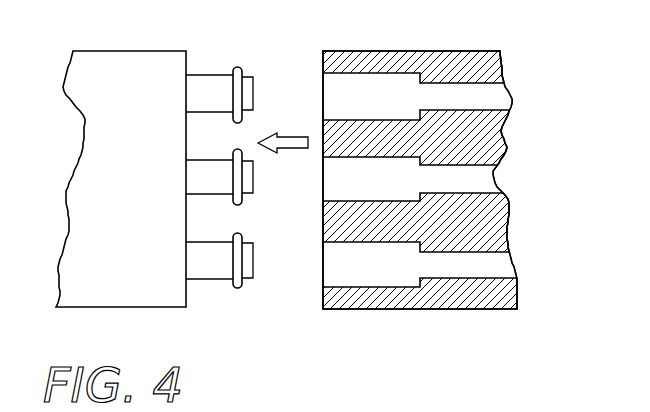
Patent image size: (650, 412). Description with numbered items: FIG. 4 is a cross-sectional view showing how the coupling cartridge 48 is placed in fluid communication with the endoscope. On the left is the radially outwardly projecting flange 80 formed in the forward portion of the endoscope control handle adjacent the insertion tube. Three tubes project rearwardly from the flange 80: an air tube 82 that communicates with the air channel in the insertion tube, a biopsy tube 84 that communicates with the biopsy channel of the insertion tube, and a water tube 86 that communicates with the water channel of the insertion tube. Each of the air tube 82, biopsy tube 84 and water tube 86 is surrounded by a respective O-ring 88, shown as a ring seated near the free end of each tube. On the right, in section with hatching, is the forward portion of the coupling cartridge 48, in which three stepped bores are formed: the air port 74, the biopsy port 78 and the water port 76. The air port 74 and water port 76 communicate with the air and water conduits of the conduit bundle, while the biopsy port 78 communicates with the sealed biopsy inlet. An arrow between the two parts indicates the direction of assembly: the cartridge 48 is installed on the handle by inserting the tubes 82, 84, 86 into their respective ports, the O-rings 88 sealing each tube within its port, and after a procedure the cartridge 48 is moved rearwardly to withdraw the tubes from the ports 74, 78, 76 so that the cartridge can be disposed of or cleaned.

The coupling cartridge 48 is at (435, 177).
The air port 74 is at (352, 90).
The water port 76 is at (358, 270).
The biopsy port 78 is at (390, 194).
The flange 80 is at (125, 50).
The air tube 82 is at (198, 87).
The biopsy tube 84 is at (205, 175).
The water tube 86 is at (205, 268).
The O-ring 88 is at (240, 69).